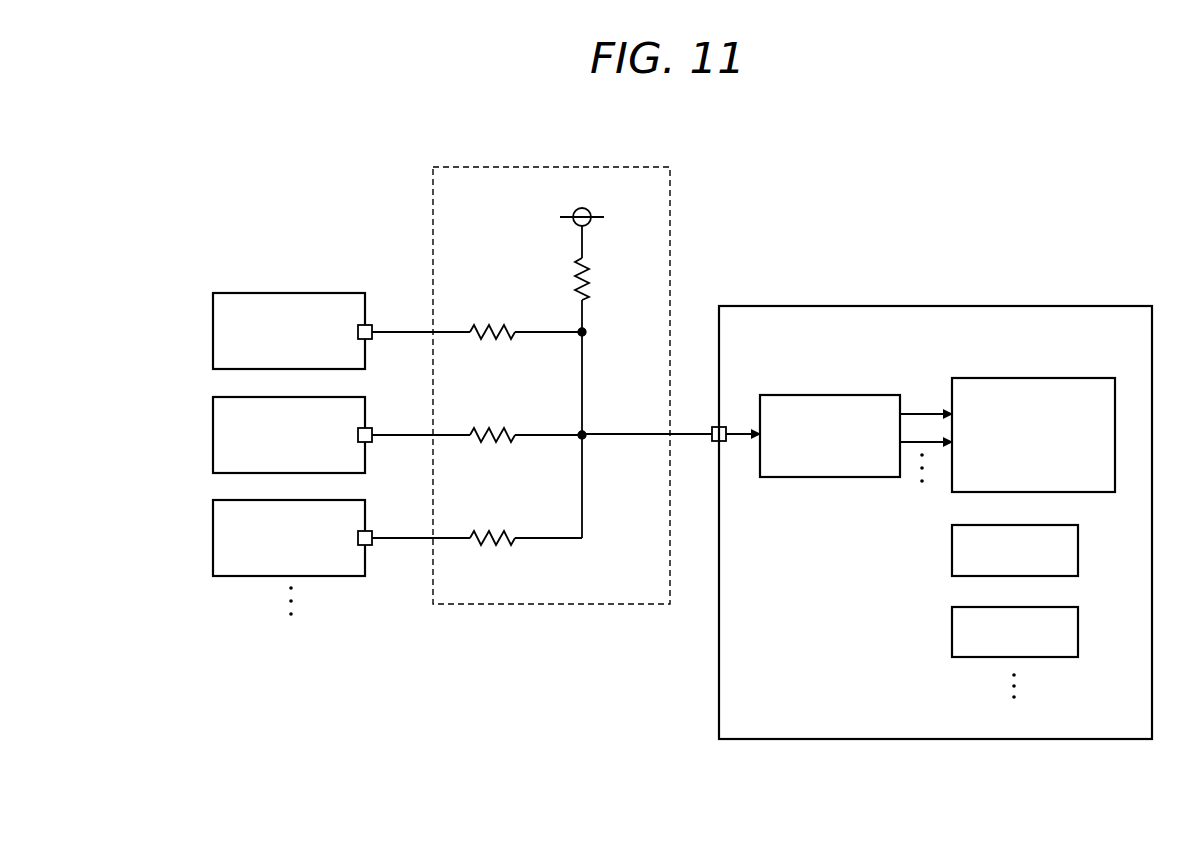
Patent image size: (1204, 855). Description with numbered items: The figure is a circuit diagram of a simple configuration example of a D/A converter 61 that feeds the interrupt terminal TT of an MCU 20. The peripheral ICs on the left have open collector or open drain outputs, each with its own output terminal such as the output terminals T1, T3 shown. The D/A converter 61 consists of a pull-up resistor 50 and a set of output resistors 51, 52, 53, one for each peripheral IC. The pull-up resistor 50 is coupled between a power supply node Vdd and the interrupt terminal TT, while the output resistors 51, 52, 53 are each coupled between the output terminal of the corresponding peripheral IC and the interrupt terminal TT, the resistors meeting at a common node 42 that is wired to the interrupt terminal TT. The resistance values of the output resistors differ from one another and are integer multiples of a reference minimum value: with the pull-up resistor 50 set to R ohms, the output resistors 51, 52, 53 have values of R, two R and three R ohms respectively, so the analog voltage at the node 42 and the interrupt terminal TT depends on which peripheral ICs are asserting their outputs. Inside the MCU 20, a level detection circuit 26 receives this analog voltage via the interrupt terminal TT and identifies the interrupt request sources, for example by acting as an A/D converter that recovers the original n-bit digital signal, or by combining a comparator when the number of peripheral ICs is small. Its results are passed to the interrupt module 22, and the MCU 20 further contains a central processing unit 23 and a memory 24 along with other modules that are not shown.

The output terminal T1 is at (373, 325).
The output terminal T3 is at (373, 428).
The interrupt terminal TT is at (712, 427).
The power supply node Vdd is at (582, 220).
The D/A converter 61 is at (622, 167).
The pull-up resistor 50 is at (575, 275).
The output resistor 51 is at (495, 340).
The output resistor 52 is at (495, 443).
The output resistor 53 is at (495, 546).
The node 42 is at (588, 432).
The MCU 20 is at (1075, 306).
The level detection circuit 26 is at (860, 395).
The interrupt module 22 is at (1066, 378).
The central processing unit 23 is at (1078, 548).
The memory 24 is at (1078, 630).